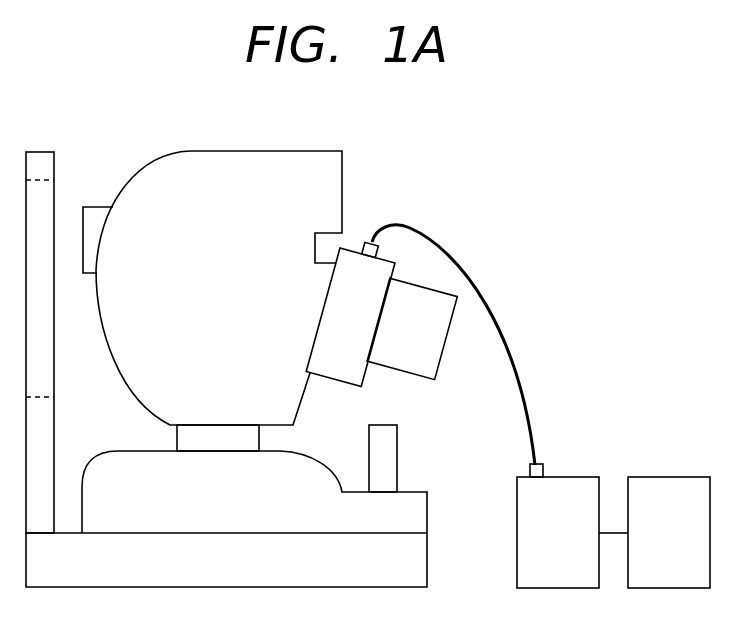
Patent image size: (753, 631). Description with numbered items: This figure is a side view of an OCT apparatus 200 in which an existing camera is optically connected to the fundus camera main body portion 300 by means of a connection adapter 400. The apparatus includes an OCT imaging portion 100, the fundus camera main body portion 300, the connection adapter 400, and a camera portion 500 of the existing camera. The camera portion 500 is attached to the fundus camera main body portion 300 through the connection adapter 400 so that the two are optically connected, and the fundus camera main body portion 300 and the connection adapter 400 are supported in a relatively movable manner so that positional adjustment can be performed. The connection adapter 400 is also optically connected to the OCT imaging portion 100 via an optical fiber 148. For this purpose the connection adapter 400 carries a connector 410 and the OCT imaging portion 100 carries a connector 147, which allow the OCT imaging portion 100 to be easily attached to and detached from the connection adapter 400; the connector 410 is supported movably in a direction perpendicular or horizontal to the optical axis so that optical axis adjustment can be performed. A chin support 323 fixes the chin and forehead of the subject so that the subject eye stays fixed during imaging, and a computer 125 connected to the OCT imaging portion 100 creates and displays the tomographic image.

The OCT apparatus 200 is at (78, 72).
The chin support 323 is at (43, 152).
The fundus camera main body portion 300 is at (212, 301).
The connection adapter 400 is at (350, 317).
The camera portion 500 is at (412, 328).
The connector 410 is at (364, 240).
The optical fiber 148 is at (489, 304).
The connector 147 is at (545, 468).
The OCT imaging portion 100 is at (572, 532).
The computer 125 is at (669, 532).